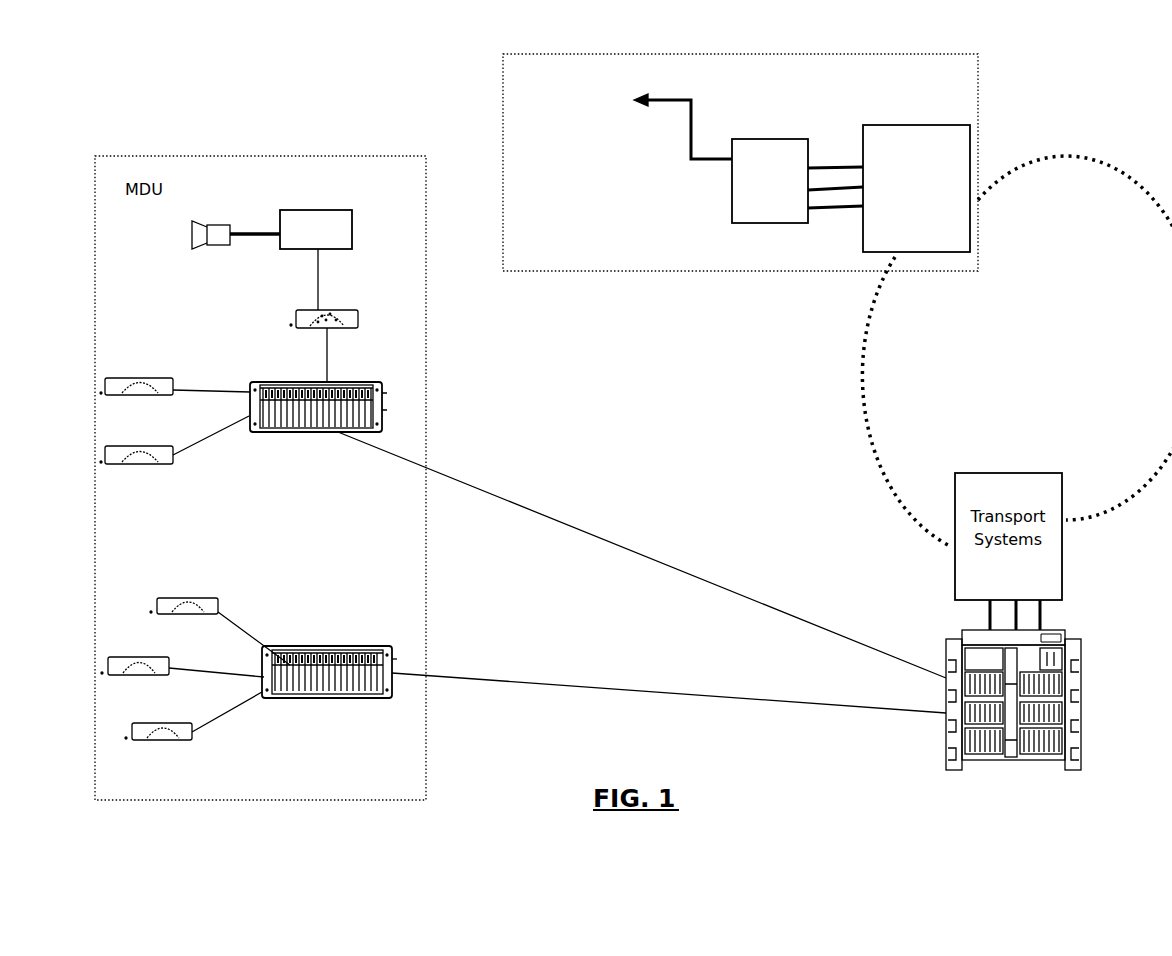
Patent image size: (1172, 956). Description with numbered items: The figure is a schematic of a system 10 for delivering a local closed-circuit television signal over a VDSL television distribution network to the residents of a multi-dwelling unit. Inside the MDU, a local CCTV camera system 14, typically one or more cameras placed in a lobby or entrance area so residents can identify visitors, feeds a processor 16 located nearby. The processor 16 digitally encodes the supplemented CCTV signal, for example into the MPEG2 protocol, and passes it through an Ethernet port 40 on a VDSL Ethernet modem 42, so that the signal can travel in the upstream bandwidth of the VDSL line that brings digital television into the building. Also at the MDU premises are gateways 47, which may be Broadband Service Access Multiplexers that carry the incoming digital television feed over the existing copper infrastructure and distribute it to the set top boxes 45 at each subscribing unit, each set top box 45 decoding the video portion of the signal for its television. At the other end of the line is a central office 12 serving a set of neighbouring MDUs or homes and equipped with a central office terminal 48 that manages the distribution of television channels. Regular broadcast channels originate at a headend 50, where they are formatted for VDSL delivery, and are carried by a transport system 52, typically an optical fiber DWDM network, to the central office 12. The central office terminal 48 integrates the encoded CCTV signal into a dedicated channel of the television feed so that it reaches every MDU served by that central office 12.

The system 10 is at (393, 128).
The central office 12 is at (1081, 610).
The local CCTV camera system 14 is at (215, 225).
The processor 16 is at (334, 210).
The Ethernet port 40 is at (328, 330).
The VDSL Ethernet modem 42 is at (348, 310).
The set top box 45 is at (120, 378).
The gateway 47 is at (279, 436).
The central office terminal 48 is at (946, 762).
The headend 50 is at (690, 272).
The transport system 52 is at (1008, 381).